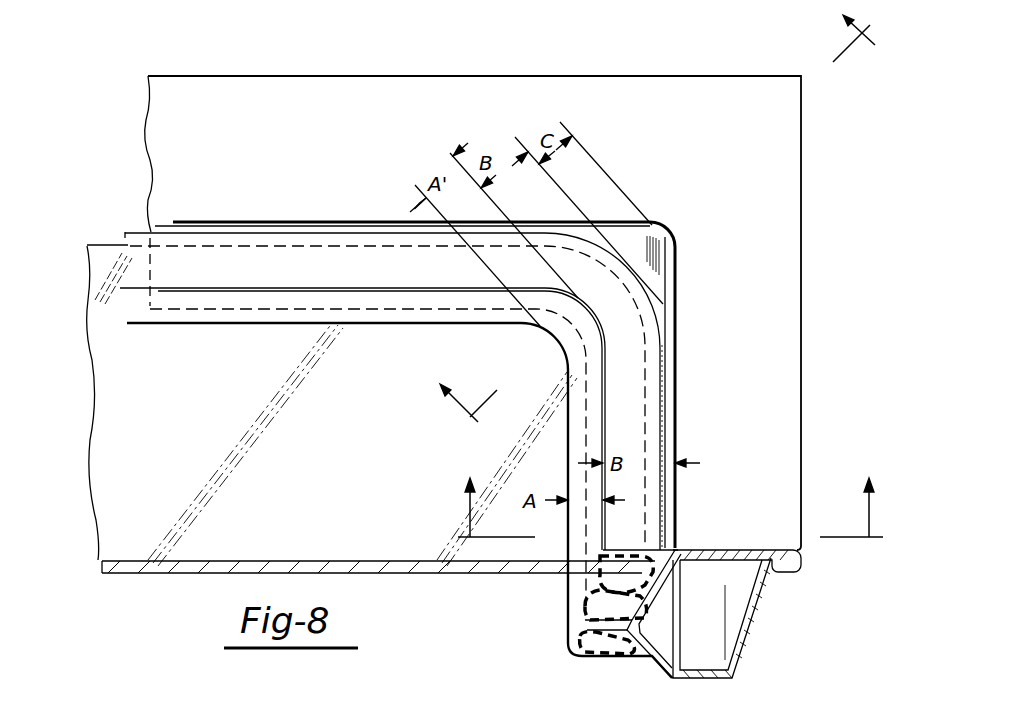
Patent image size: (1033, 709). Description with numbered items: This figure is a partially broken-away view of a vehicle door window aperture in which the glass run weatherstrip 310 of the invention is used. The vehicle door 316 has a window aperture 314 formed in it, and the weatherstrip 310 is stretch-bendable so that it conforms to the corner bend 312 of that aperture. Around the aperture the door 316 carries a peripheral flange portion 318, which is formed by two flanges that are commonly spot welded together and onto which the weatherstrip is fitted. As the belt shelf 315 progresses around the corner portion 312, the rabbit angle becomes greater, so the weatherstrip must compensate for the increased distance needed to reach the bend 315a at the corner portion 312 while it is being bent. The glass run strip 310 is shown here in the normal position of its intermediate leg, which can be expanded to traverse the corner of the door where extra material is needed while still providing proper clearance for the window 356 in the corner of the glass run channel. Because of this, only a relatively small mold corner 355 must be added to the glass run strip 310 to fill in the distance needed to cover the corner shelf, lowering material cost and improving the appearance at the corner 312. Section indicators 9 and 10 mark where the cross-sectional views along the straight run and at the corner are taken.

The glass run weatherstrip 310 is at (566, 648).
The corner bend 312 is at (669, 224).
The window aperture 314 is at (568, 446).
The belt shelf 315 is at (662, 546).
The bend 315a is at (674, 549).
The vehicle door 316 is at (756, 606).
The peripheral flange portion 318 is at (603, 636).
The mold corner 355 is at (648, 259).
The window 356 is at (325, 449).
The section line for FIG. 9 is at (663, 506).
The section line for FIG. 10 is at (644, 211).